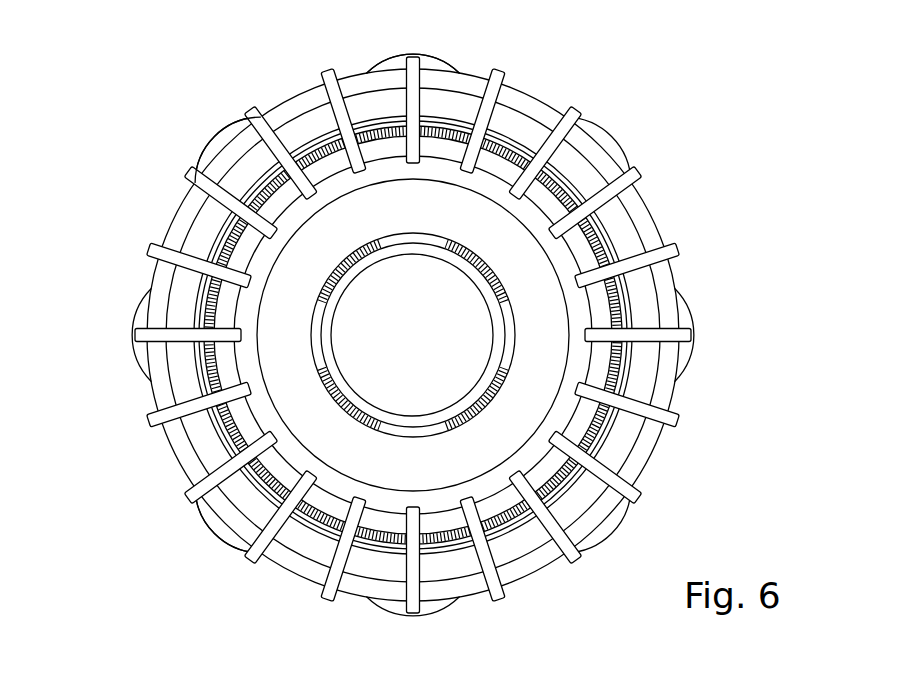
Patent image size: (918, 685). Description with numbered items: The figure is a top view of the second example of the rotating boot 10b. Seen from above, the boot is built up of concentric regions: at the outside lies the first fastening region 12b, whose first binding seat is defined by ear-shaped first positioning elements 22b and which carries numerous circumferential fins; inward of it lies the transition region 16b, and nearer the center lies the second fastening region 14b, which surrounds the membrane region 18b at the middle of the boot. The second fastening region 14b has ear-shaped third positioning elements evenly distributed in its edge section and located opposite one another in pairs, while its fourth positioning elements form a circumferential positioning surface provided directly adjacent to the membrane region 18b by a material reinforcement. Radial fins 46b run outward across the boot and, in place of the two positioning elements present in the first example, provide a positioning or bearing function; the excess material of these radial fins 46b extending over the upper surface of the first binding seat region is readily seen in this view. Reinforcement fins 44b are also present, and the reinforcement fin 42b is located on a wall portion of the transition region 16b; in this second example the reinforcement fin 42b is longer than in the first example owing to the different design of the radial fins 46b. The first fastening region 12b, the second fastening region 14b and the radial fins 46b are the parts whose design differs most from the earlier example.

The rotating boot 10b is at (704, 157).
The first fastening region 12b is at (273, 95).
The second fastening region 14b is at (467, 239).
The transition region 16b is at (183, 372).
The membrane region 18b is at (292, 287).
The first positioning elements 22b is at (395, 58).
The reinforcement fin 42b is at (178, 468).
The reinforcement fins 44b is at (226, 540).
The radial fins 46b is at (483, 72).